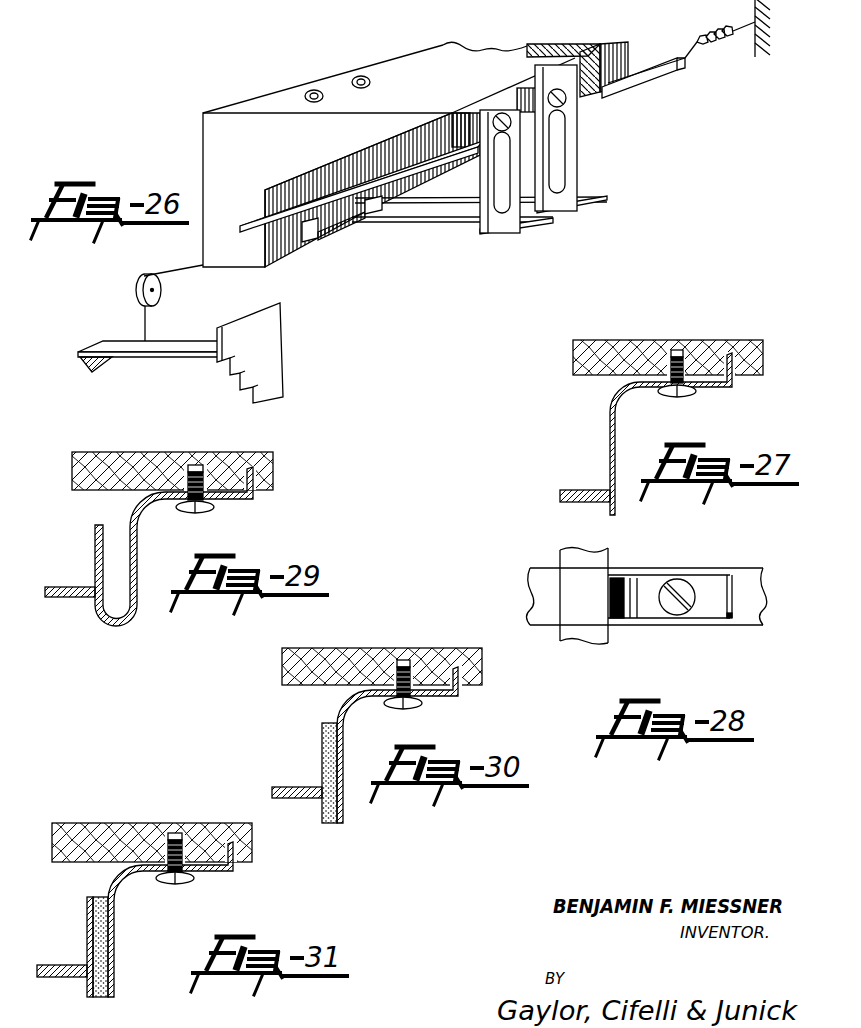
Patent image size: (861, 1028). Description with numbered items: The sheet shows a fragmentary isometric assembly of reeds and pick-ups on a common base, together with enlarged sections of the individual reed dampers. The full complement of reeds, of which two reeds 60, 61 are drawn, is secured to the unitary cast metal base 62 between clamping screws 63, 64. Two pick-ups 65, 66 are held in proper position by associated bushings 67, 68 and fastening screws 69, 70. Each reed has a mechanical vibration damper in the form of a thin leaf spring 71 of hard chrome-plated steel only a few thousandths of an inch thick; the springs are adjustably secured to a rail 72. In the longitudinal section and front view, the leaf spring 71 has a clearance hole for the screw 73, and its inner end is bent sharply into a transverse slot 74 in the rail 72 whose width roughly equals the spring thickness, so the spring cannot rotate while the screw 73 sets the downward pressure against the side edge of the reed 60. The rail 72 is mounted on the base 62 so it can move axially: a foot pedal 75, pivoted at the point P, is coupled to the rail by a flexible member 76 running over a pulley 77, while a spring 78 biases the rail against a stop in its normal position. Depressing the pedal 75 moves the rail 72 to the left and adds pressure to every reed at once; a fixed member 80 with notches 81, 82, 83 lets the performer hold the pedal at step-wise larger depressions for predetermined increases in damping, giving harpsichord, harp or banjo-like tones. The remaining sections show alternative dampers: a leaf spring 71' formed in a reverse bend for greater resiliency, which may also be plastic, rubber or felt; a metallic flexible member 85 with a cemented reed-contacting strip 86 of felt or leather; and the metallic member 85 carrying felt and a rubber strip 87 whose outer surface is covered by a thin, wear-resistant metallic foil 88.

In FIG. 26, the reed 60 is at (550, 226).
In FIG. 27, the reed 60 is at (570, 489).
In FIG. 29, the reed 60 is at (75, 586).
In FIG. 28, the reed 60 is at (583, 635).
In FIG. 30, the reed 60 is at (285, 787).
In FIG. 31, the reed 60 is at (67, 963).
In FIG. 26, the reed 61 is at (607, 199).
In FIG. 26, the unitary cast metal base 62 is at (212, 137).
In FIG. 26, the clamping screw 63 is at (310, 91).
In FIG. 26, the clamping screw 64 is at (359, 76).
In FIG. 26, the pick-up 65 is at (484, 210).
In FIG. 26, the pick-up 66 is at (568, 153).
In FIG. 26, the bushing 67 is at (454, 112).
In FIG. 26, the bushing 68 is at (527, 90).
In FIG. 26, the fastening screw 69 is at (500, 115).
In FIG. 26, the fastening screw 70 is at (567, 98).
In FIG. 26, the leaf spring 71 is at (350, 234).
In FIG. 27, the leaf spring 71 is at (671, 434).
In FIG. 28, the leaf spring 71 is at (671, 618).
In FIG. 29, the leaf spring 71' is at (174, 546).
In FIG. 26, the rail 72 is at (271, 219).
In FIG. 27, the rail 72 is at (580, 355).
In FIG. 29, the rail 72 is at (100, 455).
In FIG. 28, the rail 72 is at (750, 577).
In FIG. 30, the rail 72 is at (340, 652).
In FIG. 31, the rail 72 is at (112, 823).
In FIG. 27, the screw 73 is at (687, 395).
In FIG. 29, the screw 73 is at (203, 513).
In FIG. 28, the screw 73 is at (673, 582).
In FIG. 30, the screw 73 is at (417, 705).
In FIG. 31, the screw 73 is at (187, 885).
In FIG. 28, the transverse slot 74 is at (730, 621).
In FIG. 26, the foot pedal 75 is at (172, 350).
In FIG. 26, the flexible member 76 is at (140, 315).
In FIG. 26, the pulley 77 is at (162, 288).
In FIG. 26, the spring 78 is at (707, 37).
In FIG. 26, the fixed member 80 is at (278, 317).
In FIG. 26, the notch 81 is at (227, 368).
In FIG. 26, the notch 82 is at (242, 382).
In FIG. 26, the notch 83 is at (250, 397).
In FIG. 30, the flexible member 85 is at (350, 707).
In FIG. 31, the flexible member 85 is at (118, 883).
In FIG. 30, the reed-contacting strip 86 is at (322, 753).
In FIG. 31, the rubber strip 87 is at (102, 938).
In FIG. 31, the metallic foil 88 is at (92, 915).
In FIG. 26, the pivot point P is at (86, 366).